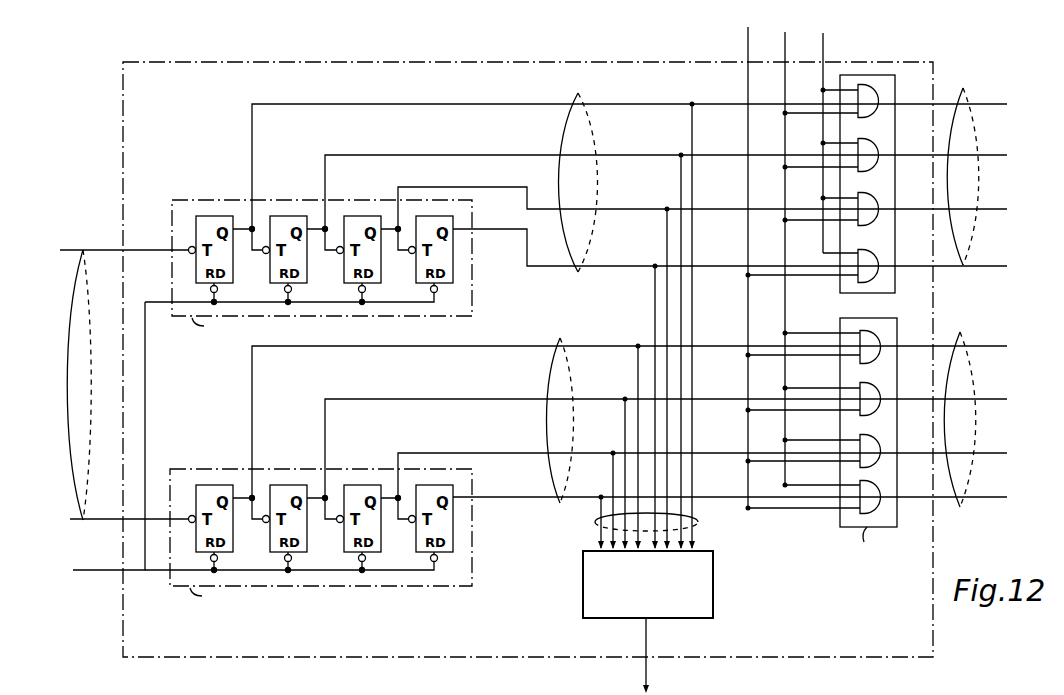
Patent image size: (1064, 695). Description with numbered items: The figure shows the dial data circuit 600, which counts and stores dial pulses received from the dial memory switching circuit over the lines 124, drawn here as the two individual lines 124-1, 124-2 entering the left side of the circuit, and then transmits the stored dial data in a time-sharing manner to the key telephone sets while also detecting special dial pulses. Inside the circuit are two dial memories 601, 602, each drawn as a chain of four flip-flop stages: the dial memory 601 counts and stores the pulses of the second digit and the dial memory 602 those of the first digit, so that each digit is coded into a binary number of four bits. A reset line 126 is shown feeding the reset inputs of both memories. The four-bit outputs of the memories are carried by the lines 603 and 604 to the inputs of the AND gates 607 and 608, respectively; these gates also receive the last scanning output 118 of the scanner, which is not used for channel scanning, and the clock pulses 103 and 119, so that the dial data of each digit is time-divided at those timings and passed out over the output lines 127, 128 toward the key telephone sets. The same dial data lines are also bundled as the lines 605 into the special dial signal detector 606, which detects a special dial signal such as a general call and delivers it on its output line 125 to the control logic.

The dial data circuit 600 is at (494, 55).
The dial memory 601 is at (197, 199).
The dial memory 602 is at (195, 470).
The lines 603 is at (580, 99).
The lines 604 is at (568, 340).
The input lines to special dial signal detector 605 is at (700, 520).
The special dial signal detector 606 is at (714, 580).
The AND gates 607 is at (895, 89).
The AND gates 608 is at (885, 318).
The clock pulses No. 103 is at (826, 43).
The last scanning output No. 118 is at (785, 43).
The clock pulses No. 119 is at (743, 42).
The lines 124 is at (66, 335).
The dial pulse input line 124-1 is at (117, 248).
The dial pulse input line 124-2 is at (117, 522).
The special dial signal detector output line 125 is at (644, 675).
The reset line 126 is at (109, 449).
The output lines of AND gates 607 127 is at (970, 90).
The output lines of AND gates 608 128 is at (962, 334).